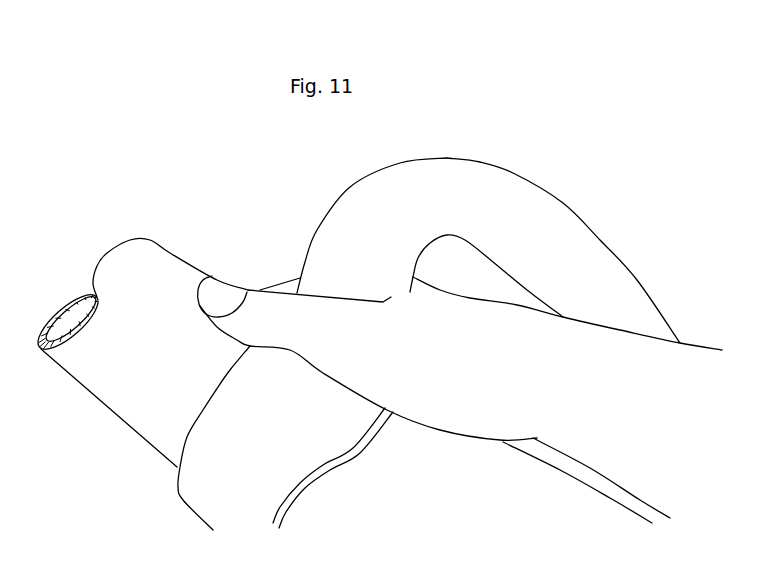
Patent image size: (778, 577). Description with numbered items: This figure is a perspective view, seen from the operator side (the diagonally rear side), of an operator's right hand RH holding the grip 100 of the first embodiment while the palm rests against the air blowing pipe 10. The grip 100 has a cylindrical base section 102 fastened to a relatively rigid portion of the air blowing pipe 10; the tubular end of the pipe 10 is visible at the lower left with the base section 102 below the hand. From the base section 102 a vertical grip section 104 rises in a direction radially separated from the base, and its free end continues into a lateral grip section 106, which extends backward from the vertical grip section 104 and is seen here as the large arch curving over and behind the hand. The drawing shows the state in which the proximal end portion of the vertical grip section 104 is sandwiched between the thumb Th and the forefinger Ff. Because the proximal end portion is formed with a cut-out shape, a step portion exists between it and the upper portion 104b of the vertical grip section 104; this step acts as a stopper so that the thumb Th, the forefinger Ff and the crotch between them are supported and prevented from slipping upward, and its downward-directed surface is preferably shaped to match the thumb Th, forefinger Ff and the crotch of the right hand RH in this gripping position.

The air blowing pipe 10 is at (173, 262).
The grip 100 is at (464, 243).
The cylindrical base section 102 is at (195, 500).
The vertical grip section 104 is at (313, 240).
The upper portion 104b is at (390, 289).
The lateral grip section 106 is at (660, 243).
The thumb Th is at (230, 335).
The forefinger Ff is at (282, 283).
The right hand RH is at (458, 412).